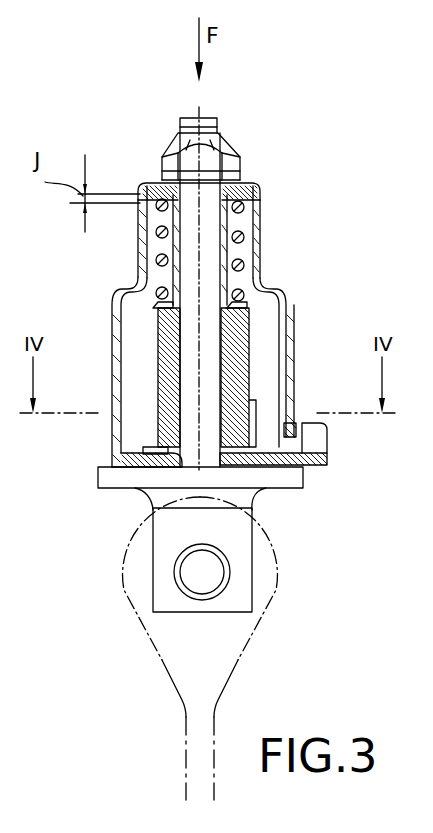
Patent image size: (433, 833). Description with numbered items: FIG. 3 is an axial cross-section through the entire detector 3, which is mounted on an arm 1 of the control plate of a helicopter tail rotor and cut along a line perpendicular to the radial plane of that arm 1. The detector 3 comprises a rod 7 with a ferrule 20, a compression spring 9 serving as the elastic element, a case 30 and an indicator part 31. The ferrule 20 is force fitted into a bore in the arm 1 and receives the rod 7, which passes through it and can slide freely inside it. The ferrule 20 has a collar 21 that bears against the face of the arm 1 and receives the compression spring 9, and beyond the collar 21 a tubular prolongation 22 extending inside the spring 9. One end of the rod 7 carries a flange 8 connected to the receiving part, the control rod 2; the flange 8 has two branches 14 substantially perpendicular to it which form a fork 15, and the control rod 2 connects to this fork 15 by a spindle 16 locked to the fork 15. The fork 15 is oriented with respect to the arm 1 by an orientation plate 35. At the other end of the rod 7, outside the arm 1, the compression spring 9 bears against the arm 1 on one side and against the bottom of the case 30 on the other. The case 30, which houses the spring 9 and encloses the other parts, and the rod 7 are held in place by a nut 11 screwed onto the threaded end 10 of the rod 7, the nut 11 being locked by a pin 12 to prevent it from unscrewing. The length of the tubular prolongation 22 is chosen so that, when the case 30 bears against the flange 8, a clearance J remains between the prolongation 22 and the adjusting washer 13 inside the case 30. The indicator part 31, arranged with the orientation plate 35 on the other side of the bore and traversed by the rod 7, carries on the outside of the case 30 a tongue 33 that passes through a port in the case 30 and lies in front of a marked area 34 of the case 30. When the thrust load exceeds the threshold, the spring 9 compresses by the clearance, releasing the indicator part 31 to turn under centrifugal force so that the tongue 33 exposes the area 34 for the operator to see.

The arm 1 is at (288, 300).
The control rod 2 is at (223, 647).
The detector 3 is at (262, 152).
The rod 7 is at (210, 248).
The flange 8 is at (248, 475).
The compression spring 9 is at (141, 232).
The threaded end 10 is at (210, 120).
The nut 11 is at (178, 147).
The pin 12 is at (170, 173).
The adjusting washer 13 is at (255, 185).
The branches 14 is at (150, 505).
The fork 15 is at (258, 583).
The spindle 16 is at (188, 583).
The ferrule 20 is at (250, 362).
The collar 21 is at (157, 308).
The tubular prolongation 22 is at (257, 220).
The case 30 is at (107, 366).
The indicator part 31 is at (312, 458).
The tongue 33 is at (322, 432).
The area 34 is at (299, 435).
The orientation plate 35 is at (254, 402).